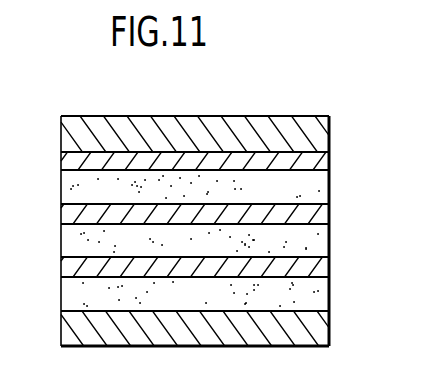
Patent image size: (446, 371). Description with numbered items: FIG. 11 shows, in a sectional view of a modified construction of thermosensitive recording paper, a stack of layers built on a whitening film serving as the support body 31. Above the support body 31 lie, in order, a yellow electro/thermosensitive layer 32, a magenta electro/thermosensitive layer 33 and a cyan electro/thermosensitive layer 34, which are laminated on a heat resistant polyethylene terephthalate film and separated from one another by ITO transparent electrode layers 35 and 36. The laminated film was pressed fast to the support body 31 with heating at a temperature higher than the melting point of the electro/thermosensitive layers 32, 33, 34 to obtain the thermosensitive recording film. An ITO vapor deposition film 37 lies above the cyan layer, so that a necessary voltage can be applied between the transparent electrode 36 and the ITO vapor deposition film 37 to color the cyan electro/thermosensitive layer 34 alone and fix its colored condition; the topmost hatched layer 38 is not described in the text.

The support body 31 is at (329, 326).
The yellow electro/thermosensitive layer 32 is at (329, 295).
The magenta electro/thermosensitive layer 33 is at (329, 245).
The cyan electro/thermosensitive layer 34 is at (329, 190).
The ITO transparent electrode layer 35 is at (329, 270).
The ITO transparent electrode layer 36 is at (329, 217).
The ITO vapor deposition film 37 is at (329, 161).
The top layer 38 is at (329, 135).